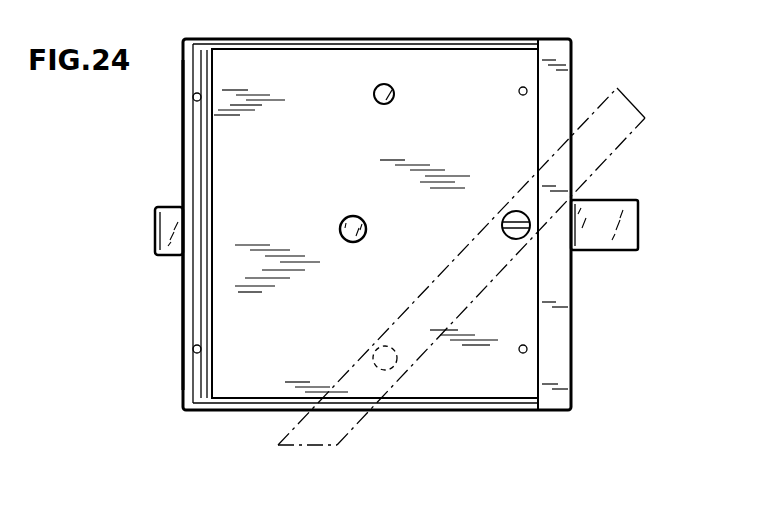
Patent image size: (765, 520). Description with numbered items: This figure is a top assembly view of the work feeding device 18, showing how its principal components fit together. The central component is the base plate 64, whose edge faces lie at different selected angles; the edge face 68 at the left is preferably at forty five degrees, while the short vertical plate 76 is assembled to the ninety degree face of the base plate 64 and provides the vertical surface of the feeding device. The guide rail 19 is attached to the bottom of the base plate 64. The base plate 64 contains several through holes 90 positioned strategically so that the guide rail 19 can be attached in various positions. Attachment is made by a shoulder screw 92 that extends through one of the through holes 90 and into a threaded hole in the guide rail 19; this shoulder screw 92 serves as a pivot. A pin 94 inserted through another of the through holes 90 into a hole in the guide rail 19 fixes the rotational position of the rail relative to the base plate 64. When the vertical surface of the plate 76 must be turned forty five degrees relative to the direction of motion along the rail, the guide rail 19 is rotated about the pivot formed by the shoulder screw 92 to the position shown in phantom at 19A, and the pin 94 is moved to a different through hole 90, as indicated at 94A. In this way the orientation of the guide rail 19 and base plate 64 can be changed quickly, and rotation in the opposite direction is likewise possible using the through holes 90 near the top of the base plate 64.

The work feeding device 18 is at (149, 166).
The base plate 64 is at (405, 58).
The short vertical plate 76 is at (571, 76).
The edge face 68 is at (190, 183).
The guide rail 19 is at (163, 238).
The guide rail rotated position 19A is at (623, 94).
The through holes 90 is at (382, 104).
The pin 94 is at (346, 218).
The shoulder screw 92 is at (503, 222).
The pin alternate position 94A is at (398, 352).